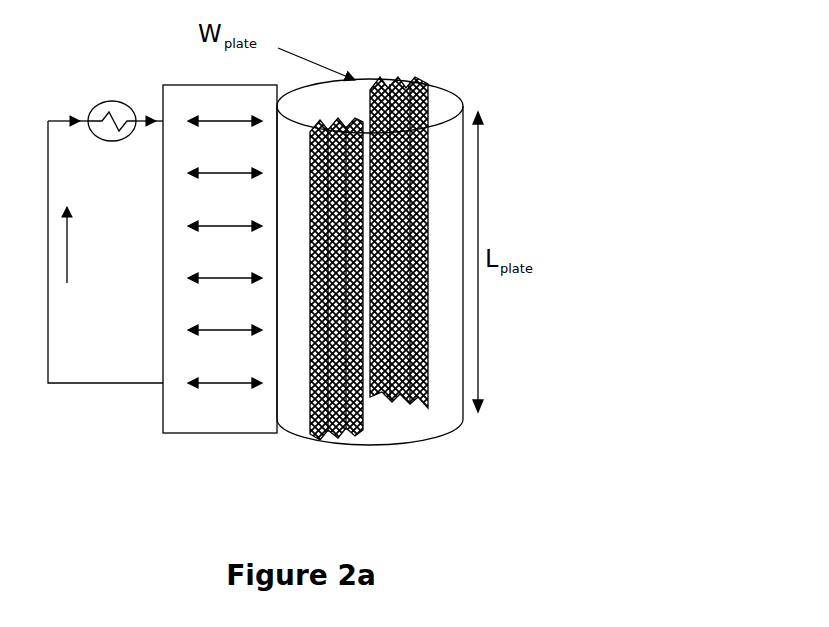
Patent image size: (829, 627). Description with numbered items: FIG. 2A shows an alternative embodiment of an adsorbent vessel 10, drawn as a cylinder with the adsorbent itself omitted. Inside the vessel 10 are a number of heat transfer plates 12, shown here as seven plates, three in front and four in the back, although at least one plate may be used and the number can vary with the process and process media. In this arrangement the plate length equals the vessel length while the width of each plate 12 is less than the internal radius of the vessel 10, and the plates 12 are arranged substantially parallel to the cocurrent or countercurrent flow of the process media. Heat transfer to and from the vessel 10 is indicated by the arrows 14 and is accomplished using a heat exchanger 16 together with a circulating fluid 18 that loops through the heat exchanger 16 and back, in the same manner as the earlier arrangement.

The adsorbent vessel 10 is at (373, 74).
The heat transfer plate 12 is at (347, 430).
The arrows 14 is at (220, 259).
The heat exchanger 16 is at (112, 107).
The circulating fluid 18 is at (83, 245).